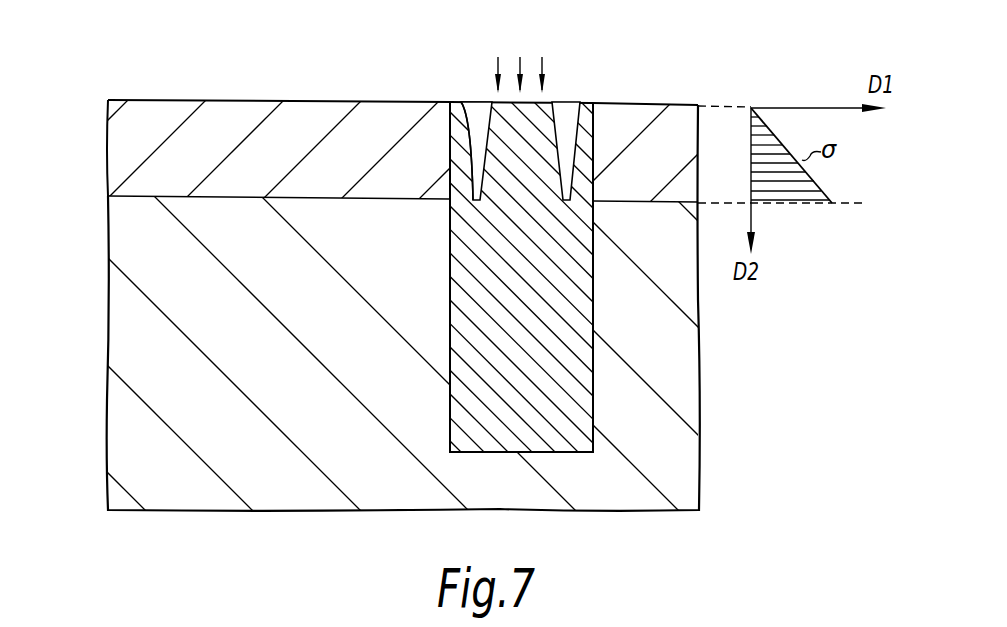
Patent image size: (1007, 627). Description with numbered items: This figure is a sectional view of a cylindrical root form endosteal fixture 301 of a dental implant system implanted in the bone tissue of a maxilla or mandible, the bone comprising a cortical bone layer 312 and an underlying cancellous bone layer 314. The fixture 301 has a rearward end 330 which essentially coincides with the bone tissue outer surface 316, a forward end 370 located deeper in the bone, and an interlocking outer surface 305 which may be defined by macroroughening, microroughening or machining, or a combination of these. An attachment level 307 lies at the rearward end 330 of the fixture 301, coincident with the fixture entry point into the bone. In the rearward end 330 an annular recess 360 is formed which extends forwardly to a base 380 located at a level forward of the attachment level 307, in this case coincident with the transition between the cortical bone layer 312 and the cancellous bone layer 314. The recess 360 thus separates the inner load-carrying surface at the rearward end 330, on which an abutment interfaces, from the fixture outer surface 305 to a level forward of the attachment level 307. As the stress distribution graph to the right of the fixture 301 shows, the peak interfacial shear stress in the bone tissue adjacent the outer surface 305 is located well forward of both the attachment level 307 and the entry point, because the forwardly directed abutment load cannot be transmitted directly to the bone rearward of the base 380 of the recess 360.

The fixture 301 is at (625, 409).
The interlocking outer surface 305 is at (593, 318).
The attachment level 307 is at (589, 103).
The cortical bone layer 312 is at (108, 145).
The cancellous bone layer 314 is at (107, 290).
The bone tissue outer surface 316 is at (325, 100).
The rearward end 330 is at (477, 83).
The annular recess 360 is at (564, 120).
The forward end 370 is at (493, 452).
The base 380 is at (461, 102).